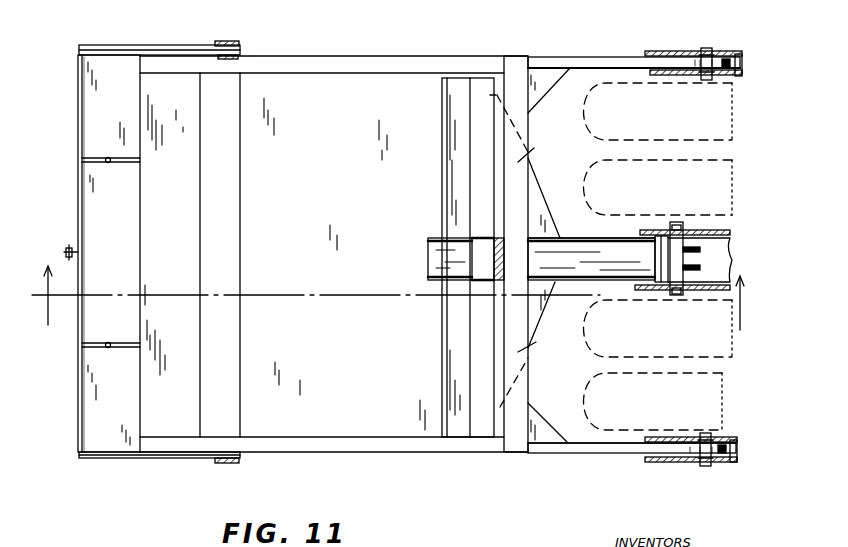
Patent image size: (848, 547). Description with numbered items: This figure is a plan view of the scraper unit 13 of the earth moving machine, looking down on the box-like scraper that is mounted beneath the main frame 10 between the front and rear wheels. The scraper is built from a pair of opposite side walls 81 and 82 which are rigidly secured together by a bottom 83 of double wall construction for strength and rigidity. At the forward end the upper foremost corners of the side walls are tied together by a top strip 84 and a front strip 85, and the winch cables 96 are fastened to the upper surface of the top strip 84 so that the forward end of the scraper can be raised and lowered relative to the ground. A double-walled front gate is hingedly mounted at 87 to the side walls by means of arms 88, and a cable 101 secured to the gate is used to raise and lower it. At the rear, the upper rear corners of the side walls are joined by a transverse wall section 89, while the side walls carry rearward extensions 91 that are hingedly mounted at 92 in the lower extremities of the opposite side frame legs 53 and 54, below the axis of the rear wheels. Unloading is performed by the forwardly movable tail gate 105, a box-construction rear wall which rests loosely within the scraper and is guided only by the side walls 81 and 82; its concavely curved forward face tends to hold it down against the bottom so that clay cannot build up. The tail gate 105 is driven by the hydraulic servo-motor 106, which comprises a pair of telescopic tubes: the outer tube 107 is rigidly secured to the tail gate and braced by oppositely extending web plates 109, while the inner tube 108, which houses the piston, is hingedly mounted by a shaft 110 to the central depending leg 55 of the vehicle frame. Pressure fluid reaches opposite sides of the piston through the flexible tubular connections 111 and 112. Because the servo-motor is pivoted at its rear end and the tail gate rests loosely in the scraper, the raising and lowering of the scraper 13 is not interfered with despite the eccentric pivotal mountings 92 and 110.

The main frame 10 is at (389, 309).
The scraper unit 13 is at (320, 210).
The side frame leg 53 is at (653, 464).
The side frame leg 54 is at (660, 52).
The center leg 55 is at (728, 264).
The side wall 81 is at (308, 68).
The side wall 82 is at (338, 446).
The bottom 83 is at (392, 105).
The top strip 84 is at (133, 213).
The front strip 85 is at (78, 136).
The hinge mounting 87 is at (227, 41).
The arm 88 is at (128, 45).
The transverse wall section 89 is at (532, 254).
The rearward extension 91 is at (564, 57).
The hinge mounting 92 is at (716, 28).
The cable 96 is at (108, 157).
The cable 101 is at (66, 251).
The tail gate 105 is at (465, 200).
The hydraulic servo-motor 106 is at (541, 259).
The outer tube 107 is at (576, 238).
The inner tube 108 is at (661, 282).
The web plate 109 is at (540, 188).
The shaft 110 is at (678, 228).
The flexible tubular connection 111 is at (694, 236).
The flexible tubular connection 112 is at (685, 286).